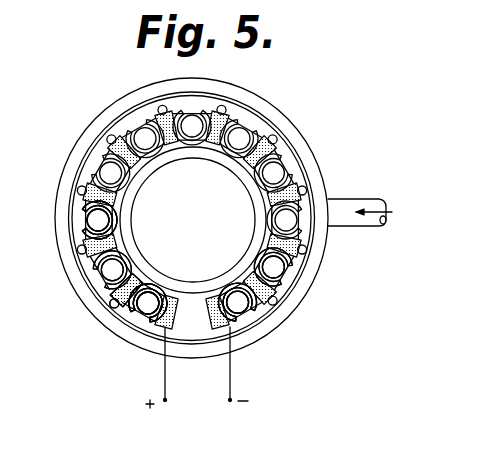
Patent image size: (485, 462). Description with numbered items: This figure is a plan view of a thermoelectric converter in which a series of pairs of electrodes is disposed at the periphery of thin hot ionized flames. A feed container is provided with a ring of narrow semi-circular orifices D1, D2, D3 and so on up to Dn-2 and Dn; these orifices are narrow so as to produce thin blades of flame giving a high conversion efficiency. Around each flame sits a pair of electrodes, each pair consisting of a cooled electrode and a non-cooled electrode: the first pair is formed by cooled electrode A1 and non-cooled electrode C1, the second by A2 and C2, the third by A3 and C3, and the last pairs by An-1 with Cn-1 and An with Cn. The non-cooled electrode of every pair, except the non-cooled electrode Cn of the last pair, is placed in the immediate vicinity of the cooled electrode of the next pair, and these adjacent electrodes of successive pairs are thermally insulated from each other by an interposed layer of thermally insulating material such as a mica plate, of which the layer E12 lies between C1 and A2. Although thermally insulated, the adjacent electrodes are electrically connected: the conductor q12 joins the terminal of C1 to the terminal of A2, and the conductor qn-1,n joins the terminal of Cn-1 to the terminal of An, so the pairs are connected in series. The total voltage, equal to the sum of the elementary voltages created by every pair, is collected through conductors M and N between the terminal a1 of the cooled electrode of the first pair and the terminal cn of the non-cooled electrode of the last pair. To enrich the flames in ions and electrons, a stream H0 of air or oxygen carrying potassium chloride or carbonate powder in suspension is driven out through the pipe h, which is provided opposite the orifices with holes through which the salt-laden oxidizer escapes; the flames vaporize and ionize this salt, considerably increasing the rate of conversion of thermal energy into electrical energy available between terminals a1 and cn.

The orifice D3 is at (88, 226).
The orifice D2 is at (108, 287).
The orifice D1 is at (141, 310).
The orifice Dn is at (264, 313).
The orifice Dn-2 is at (306, 214).
The thermal insulator layer E12 is at (110, 299).
The conductor q12 is at (119, 297).
The conductor qn-1,n is at (286, 291).
The terminal cn is at (228, 319).
The terminal a1 is at (170, 330).
The conductor M is at (165, 383).
The conductor N is at (230, 384).
The pipe h is at (361, 227).
The stream of air or oxygen H0 is at (386, 213).
The non-cooled electrode C3 is at (118, 204).
The cooled electrode A3 is at (115, 226).
The non-cooled electrode C2 is at (125, 255).
The cooled electrode A2 is at (141, 274).
The non-cooled electrode C1 is at (140, 283).
The cooled electrode A1 is at (168, 293).
The cooled electrode An-1 is at (266, 238).
The non-cooled electrode Cn-1 is at (262, 265).
The cooled electrode An is at (223, 293).
The non-cooled electrode Cn is at (220, 293).